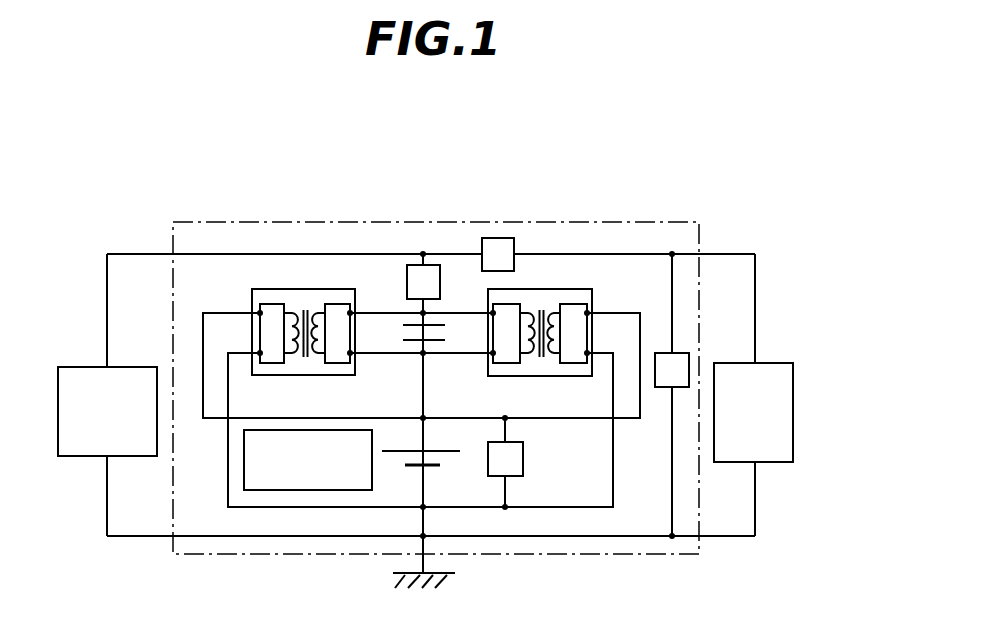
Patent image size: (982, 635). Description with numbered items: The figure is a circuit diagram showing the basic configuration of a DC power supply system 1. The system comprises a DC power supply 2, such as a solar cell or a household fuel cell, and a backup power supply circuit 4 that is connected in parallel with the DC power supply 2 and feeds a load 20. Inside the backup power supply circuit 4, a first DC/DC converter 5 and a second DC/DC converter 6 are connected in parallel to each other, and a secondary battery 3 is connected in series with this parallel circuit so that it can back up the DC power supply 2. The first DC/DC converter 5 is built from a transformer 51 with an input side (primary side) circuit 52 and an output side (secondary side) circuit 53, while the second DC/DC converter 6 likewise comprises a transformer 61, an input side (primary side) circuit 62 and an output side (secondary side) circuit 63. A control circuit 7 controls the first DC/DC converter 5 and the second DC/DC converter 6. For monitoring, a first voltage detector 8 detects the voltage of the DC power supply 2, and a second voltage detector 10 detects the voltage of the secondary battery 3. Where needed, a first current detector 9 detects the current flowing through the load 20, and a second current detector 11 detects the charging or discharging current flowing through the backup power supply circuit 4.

The DC power supply system 1 is at (387, 127).
The DC power supply 2 is at (137, 457).
The secondary battery 3 is at (435, 467).
The backup power supply circuit 4 is at (438, 220).
The first DC/DC converter 5 is at (629, 270).
The transformer 51 is at (541, 310).
The input side (primary side) circuit 52 is at (512, 307).
The output side (secondary side) circuit 53 is at (582, 332).
The second DC/DC converter 6 is at (274, 273).
The transformer 61 is at (303, 308).
The input side (primary side) circuit 62 is at (262, 332).
The output side (secondary side) circuit 63 is at (338, 310).
The control circuit 7 is at (318, 490).
The first voltage detector 8 is at (680, 353).
The first current detector 9 is at (492, 238).
The second voltage detector 10 is at (523, 458).
The second current detector 11 is at (407, 272).
The load 20 is at (775, 462).